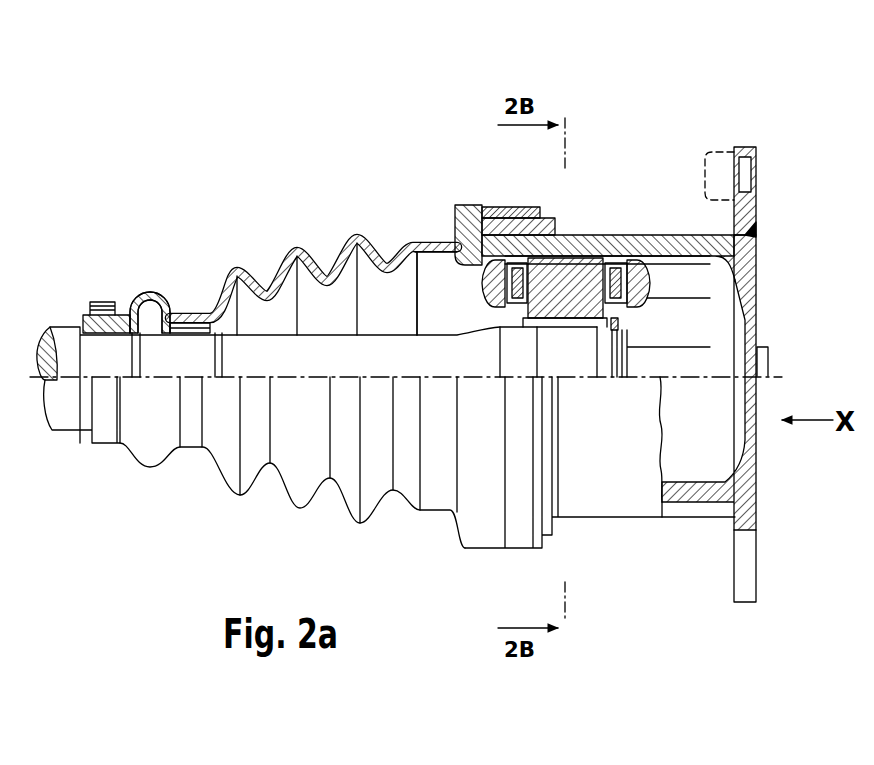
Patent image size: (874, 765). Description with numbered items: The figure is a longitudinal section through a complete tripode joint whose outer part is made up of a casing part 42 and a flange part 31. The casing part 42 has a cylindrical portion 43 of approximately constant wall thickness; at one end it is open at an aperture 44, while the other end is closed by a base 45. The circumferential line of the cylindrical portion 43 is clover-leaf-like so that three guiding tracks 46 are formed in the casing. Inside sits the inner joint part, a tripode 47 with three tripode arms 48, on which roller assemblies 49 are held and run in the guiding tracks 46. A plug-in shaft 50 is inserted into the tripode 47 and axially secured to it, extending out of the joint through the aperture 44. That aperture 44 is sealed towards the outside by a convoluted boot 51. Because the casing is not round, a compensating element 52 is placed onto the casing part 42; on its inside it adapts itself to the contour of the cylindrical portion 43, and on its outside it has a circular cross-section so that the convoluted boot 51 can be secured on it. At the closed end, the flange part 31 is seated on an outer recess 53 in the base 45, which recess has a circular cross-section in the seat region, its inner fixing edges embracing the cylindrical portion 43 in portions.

The flange part 31 is at (720, 215).
The casing part 42 is at (552, 206).
The cylindrical portion 43 is at (622, 248).
The aperture 44 is at (457, 252).
The base 45 is at (748, 318).
The guiding tracks 46 is at (683, 275).
The tripode 47 is at (575, 265).
The tripode arms 48 is at (585, 313).
The roller assemblies 49 is at (640, 265).
The plug-in shaft 50 is at (272, 338).
The convoluted boot 51 is at (297, 250).
The compensating element 52 is at (490, 222).
The outer recess 53 is at (754, 230).